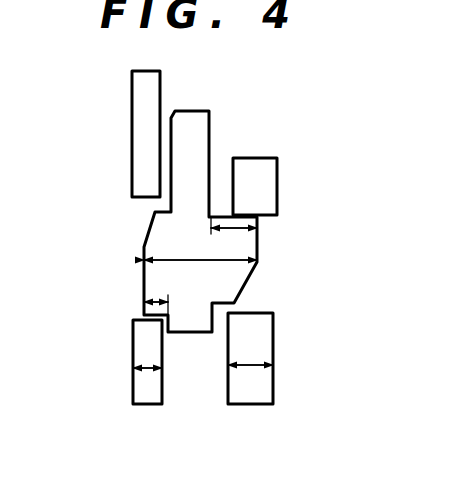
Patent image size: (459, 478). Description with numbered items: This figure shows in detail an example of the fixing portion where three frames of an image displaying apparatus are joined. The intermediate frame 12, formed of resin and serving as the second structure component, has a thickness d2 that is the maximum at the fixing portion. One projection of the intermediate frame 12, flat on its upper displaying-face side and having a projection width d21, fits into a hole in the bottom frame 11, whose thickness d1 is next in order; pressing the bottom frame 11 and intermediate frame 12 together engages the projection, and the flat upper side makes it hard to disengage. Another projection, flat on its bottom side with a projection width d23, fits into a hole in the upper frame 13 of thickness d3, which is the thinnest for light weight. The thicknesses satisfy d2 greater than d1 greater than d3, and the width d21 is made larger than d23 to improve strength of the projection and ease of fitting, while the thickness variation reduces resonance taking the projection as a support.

The bottom frame 11 is at (273, 188).
The intermediate frame 12 is at (206, 133).
The upper frame 13 is at (142, 167).
The thickness of the bottom frame d1 is at (250, 350).
The thickness of the intermediate frame d2 is at (200, 245).
The projection width on the bottom frame side d21 is at (234, 230).
The projection width on the upper frame side d23 is at (150, 300).
The thickness of the upper frame d3 is at (148, 372).